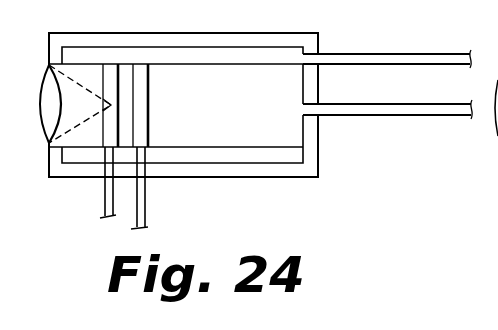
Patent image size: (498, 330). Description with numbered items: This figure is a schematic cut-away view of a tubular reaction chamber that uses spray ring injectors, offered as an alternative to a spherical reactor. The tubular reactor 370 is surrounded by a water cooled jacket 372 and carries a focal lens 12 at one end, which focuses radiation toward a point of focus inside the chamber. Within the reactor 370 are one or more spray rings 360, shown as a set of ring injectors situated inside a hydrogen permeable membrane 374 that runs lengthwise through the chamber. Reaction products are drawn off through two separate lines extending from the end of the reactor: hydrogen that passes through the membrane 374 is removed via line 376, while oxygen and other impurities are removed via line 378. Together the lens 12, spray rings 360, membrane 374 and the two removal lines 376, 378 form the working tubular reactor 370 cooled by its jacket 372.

The focal lens 12 is at (52, 113).
The spray rings 360 is at (118, 92).
The tubular reactor 370 is at (212, 178).
The water cooled jacket 372 is at (294, 165).
The hydrogen permeable membrane 374 is at (288, 66).
The line 376 is at (367, 64).
The line 378 is at (387, 116).